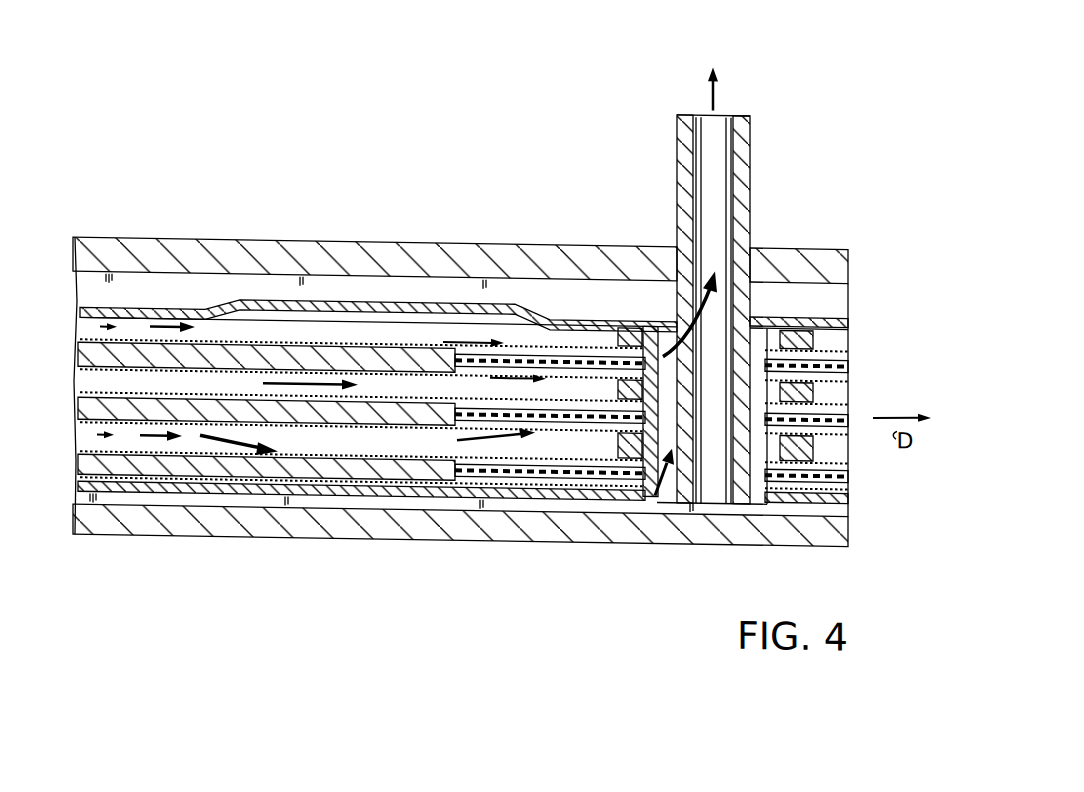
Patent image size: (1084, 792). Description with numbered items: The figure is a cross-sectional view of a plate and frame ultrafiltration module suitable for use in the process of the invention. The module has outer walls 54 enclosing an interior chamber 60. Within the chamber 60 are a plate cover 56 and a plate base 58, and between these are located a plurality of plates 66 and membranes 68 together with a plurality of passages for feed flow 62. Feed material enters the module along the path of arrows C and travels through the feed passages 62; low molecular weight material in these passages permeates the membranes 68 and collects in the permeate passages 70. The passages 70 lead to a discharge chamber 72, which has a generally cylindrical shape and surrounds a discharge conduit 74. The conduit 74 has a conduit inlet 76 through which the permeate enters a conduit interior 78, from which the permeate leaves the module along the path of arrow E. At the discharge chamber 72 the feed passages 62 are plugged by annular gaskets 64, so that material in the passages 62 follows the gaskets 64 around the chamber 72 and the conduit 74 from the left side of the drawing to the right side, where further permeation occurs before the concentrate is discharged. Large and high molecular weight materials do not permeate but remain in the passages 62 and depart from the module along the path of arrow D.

The outer walls 54 is at (383, 234).
The plate cover 56 is at (147, 304).
The plate base 58 is at (165, 477).
The interior chamber 60 is at (330, 282).
The passages for feed flow 62 is at (245, 381).
The annular gaskets 64 is at (848, 426).
The plates 66 is at (130, 343).
The membranes 68 is at (330, 360).
The passages 70 is at (573, 341).
The discharge chamber 72 is at (660, 496).
The discharge conduit 74 is at (745, 428).
The conduit inlet 76 is at (753, 325).
The conduit interior 78 is at (740, 498).